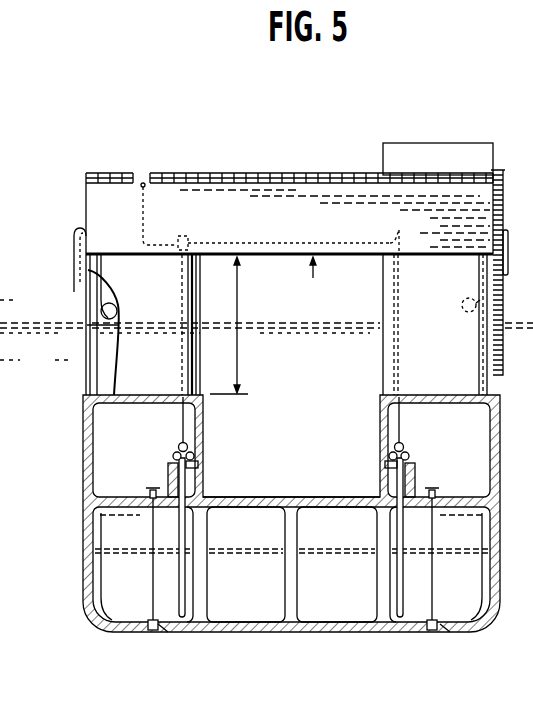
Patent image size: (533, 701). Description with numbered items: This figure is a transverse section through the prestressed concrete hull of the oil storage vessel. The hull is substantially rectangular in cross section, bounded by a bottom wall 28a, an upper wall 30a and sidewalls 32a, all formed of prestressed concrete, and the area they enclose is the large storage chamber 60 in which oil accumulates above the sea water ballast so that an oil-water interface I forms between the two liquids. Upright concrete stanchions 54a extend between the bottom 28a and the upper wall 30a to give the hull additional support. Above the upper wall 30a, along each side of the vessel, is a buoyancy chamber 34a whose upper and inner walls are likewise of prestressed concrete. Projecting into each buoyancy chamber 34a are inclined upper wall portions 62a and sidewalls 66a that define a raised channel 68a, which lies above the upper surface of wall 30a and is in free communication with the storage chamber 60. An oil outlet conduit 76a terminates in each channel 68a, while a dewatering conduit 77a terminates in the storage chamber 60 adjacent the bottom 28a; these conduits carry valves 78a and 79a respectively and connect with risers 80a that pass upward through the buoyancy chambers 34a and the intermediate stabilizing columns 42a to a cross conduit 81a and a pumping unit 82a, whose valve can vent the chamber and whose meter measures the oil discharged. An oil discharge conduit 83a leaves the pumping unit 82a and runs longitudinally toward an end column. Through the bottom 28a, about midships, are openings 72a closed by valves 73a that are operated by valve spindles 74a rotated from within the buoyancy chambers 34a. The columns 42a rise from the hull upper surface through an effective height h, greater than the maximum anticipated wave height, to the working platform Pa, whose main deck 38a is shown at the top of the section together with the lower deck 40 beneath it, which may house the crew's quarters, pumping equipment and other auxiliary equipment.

The bottom wall 28a is at (275, 632).
The upper wall 30a is at (285, 497).
The sidewalls 32a is at (84, 570).
The buoyancy chambers 34a is at (132, 455).
The main deck 38a is at (238, 178).
The pipe line 40 is at (250, 252).
The stabilizing columns 42a is at (86, 305).
The upright concrete stanchions 54a is at (297, 537).
The storage chamber 60 is at (350, 585).
The upper wall portions 62a is at (177, 462).
The sidewalls 66a is at (170, 480).
The upwardly inclined channels 68a is at (190, 490).
The openings 72a is at (162, 632).
The valves 73a is at (148, 630).
The valve spindles 74a is at (153, 532).
The oil outlet or discharge conduit 76a is at (193, 447).
The dewatering conduits 77a is at (185, 532).
The valve 78a is at (195, 455).
The valve 79a is at (180, 444).
The risers 80a is at (185, 298).
The cross conduit 81a is at (289, 214).
The pumping unit 82a is at (186, 234).
The oil discharge conduit 83a is at (143, 230).
The effective height h is at (238, 310).
The working platform Pa is at (313, 278).
The oil-water interface I is at (252, 547).